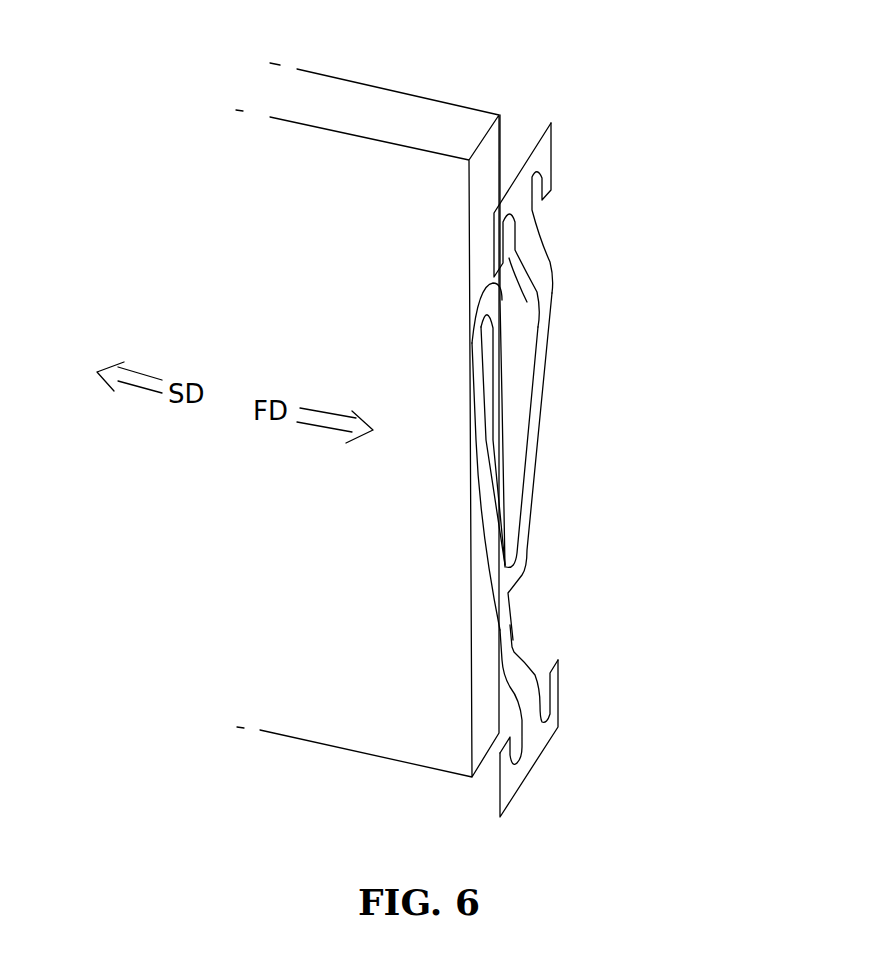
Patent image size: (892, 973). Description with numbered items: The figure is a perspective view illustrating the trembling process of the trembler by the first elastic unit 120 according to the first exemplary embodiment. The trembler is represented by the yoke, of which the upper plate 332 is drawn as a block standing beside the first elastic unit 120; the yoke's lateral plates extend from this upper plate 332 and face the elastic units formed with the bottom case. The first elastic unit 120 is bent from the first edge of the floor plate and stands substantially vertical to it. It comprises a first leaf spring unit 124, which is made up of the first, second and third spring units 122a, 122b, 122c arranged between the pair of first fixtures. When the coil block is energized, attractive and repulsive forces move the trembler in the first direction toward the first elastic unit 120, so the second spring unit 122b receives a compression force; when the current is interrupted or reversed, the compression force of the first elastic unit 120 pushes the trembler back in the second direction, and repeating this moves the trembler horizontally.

The upper plate 332 is at (420, 110).
The first elastic unit 120 is at (558, 258).
The first spring unit 122a is at (542, 340).
The second spring unit 122b is at (500, 415).
The third spring unit 122c is at (495, 520).
The first leaf spring unit 124 is at (683, 322).